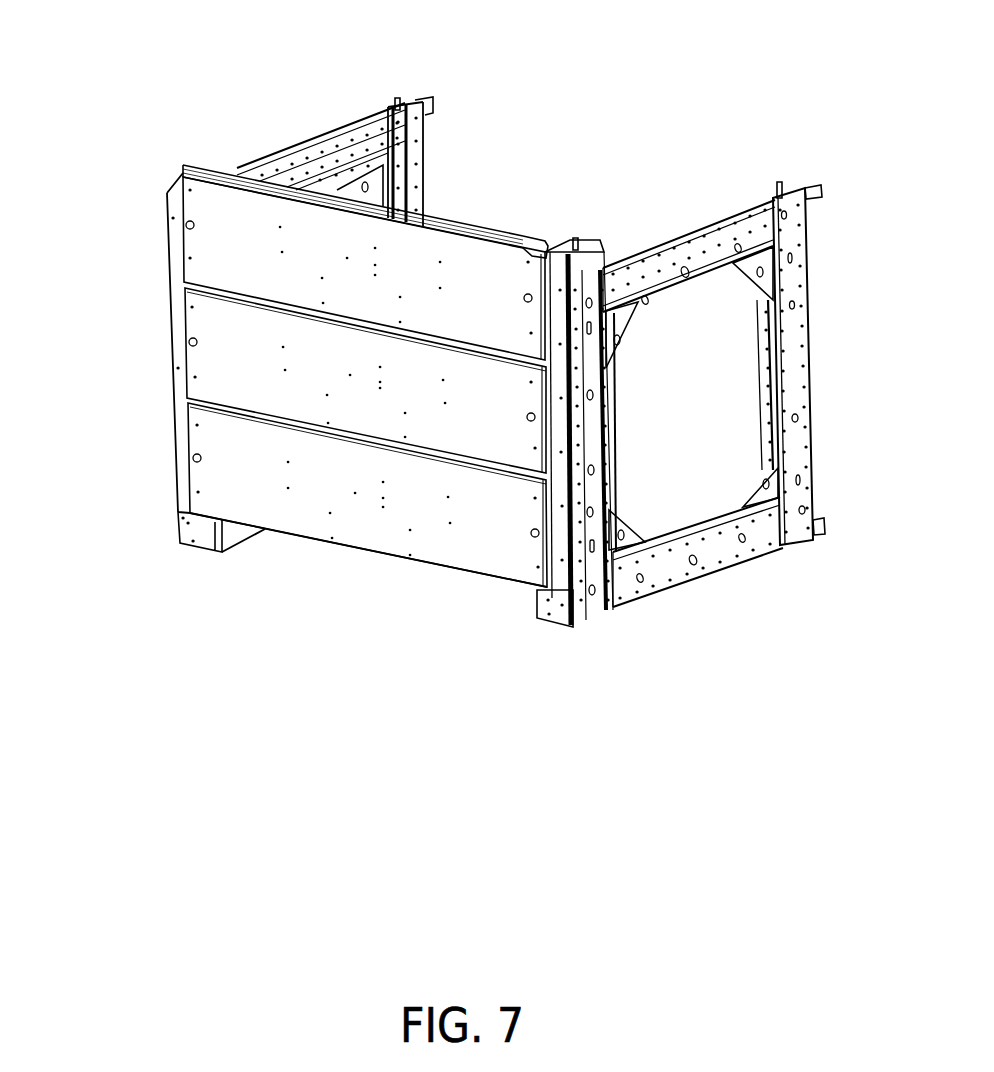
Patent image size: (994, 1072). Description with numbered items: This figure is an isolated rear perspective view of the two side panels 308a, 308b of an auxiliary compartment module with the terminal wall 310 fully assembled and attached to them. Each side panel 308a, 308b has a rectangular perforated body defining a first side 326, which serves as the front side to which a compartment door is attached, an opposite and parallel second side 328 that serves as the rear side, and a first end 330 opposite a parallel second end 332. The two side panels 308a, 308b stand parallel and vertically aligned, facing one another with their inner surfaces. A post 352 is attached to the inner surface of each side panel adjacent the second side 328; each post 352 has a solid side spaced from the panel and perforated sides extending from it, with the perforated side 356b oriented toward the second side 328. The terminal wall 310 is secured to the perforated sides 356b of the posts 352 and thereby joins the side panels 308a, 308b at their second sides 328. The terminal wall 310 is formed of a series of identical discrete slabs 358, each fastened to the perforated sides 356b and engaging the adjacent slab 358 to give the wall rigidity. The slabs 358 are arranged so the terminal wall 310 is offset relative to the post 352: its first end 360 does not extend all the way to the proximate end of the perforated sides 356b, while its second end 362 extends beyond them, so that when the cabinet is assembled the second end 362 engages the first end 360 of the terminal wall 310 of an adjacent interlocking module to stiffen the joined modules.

The side panel 308a is at (745, 188).
The side panel 308b is at (352, 108).
The terminal wall 310 is at (210, 168).
The first side 326 is at (442, 161).
The second side 328 is at (147, 422).
The first end 330 is at (283, 126).
The second end 332 is at (260, 556).
The post 352 is at (577, 248).
The perforated side 356b is at (203, 537).
The slab 358 is at (272, 270).
The first end 360 is at (358, 576).
The second end 362 is at (508, 205).